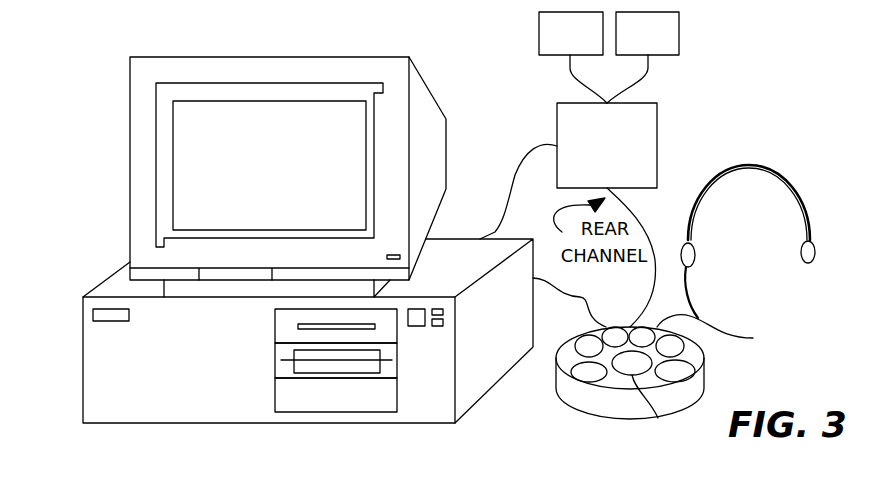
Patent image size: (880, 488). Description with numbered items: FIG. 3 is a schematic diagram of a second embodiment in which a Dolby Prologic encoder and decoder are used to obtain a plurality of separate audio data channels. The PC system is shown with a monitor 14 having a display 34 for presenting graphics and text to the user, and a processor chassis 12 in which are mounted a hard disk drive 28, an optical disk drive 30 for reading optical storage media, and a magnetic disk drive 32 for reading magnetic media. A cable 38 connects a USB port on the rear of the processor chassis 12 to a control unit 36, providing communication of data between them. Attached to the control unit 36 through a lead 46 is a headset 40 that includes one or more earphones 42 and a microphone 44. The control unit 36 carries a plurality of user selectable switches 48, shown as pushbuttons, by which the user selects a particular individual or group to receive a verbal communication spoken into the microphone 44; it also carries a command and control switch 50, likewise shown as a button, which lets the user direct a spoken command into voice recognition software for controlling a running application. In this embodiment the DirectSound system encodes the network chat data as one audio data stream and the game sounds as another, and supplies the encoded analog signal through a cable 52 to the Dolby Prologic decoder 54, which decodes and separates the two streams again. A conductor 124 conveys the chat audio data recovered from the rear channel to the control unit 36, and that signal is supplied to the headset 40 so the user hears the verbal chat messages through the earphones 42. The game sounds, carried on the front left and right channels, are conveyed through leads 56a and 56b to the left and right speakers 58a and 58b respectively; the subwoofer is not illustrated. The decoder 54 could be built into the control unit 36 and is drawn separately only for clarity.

The processor chassis 12 is at (83, 315).
The monitor 14 is at (446, 155).
The hard disk drive 28 is at (275, 392).
The optical disk drive 30 is at (275, 373).
The magnetic disk drive 32 is at (275, 328).
The display 34 is at (272, 173).
The control unit 36 is at (619, 388).
The cable 38 is at (582, 320).
The headset 40 is at (760, 166).
The earphones 42 is at (697, 255).
The microphone 44 is at (700, 313).
The lead 46 is at (719, 333).
The user selectable switches 48 is at (572, 371).
The command and control (C & C) switch 50 is at (642, 400).
The cable 52 is at (522, 156).
The Dolby Prologic decoder 54 is at (657, 112).
The lead 56a is at (570, 73).
The lead 56b is at (648, 76).
The left speaker 58a is at (539, 37).
The right speaker 58b is at (679, 37).
The conductor 124 is at (658, 218).